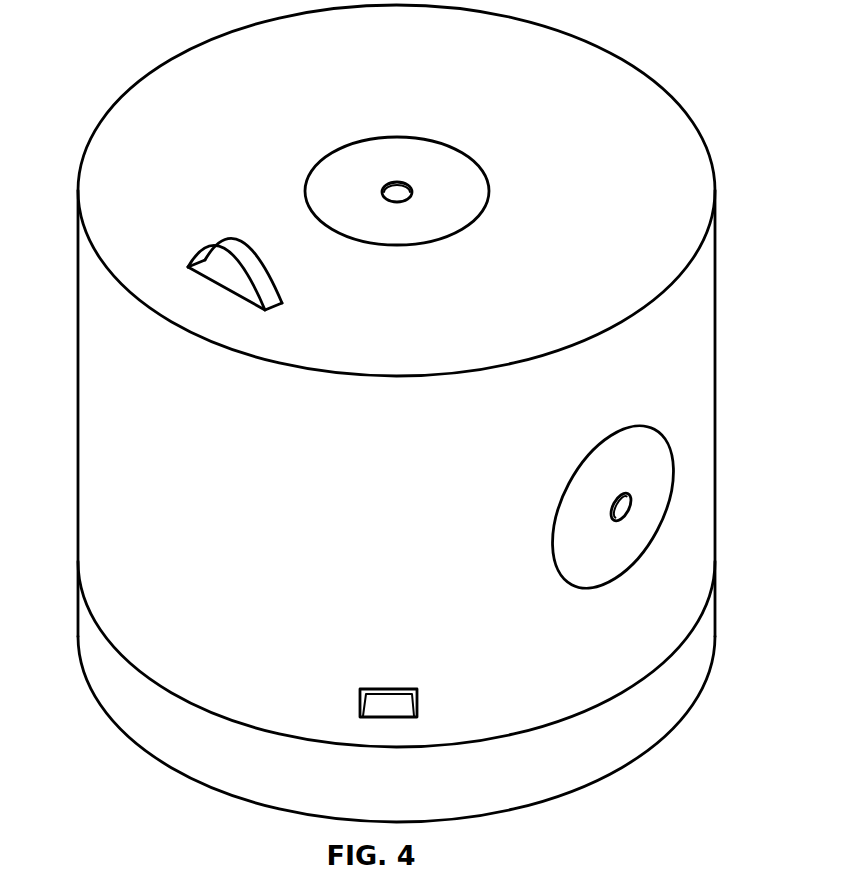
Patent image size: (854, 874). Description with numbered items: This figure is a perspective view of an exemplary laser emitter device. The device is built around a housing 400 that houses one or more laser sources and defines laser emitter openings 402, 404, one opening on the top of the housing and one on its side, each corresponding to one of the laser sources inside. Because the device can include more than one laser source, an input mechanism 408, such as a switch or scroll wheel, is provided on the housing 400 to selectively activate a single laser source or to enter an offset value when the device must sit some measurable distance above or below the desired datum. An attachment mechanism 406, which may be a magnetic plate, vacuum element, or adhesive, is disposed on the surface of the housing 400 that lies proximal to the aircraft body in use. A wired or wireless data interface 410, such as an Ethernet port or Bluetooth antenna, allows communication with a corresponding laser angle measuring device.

The housing 400 is at (132, 98).
The laser emitter opening 402 is at (382, 192).
The laser emitter opening 404 is at (612, 510).
The attachment mechanism 406 is at (160, 727).
The input mechanism 408 is at (223, 263).
The data interface 410 is at (362, 698).